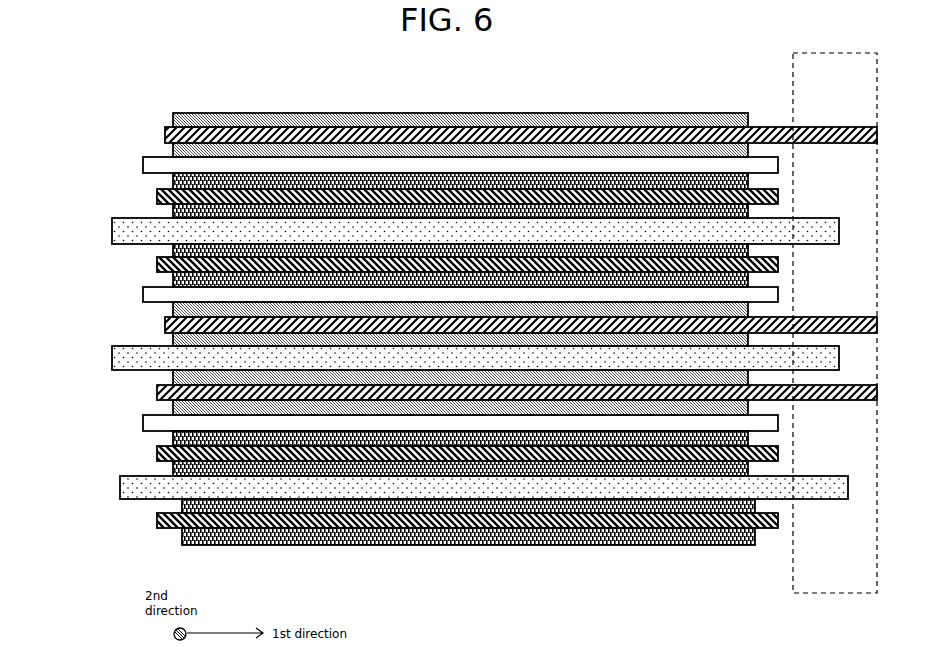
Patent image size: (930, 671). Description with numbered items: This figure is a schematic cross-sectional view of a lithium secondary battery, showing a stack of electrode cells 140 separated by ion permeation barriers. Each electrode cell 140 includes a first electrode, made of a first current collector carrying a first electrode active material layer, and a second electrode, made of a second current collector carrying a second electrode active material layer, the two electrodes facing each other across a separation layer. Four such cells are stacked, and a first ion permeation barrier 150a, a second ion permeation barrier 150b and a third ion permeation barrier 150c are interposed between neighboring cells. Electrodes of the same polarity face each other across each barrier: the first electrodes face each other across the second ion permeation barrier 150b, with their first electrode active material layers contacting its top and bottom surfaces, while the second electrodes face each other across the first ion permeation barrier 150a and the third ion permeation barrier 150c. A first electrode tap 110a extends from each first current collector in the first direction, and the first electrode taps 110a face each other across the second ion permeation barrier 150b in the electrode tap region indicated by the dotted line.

The first electrode tap 110a is at (823, 127).
The electrode cell 140 is at (443, 169).
The first ion permeation barrier 150a is at (112, 238).
The second ion permeation barrier 150b is at (112, 358).
The third ion permeation barrier 150c is at (120, 486).